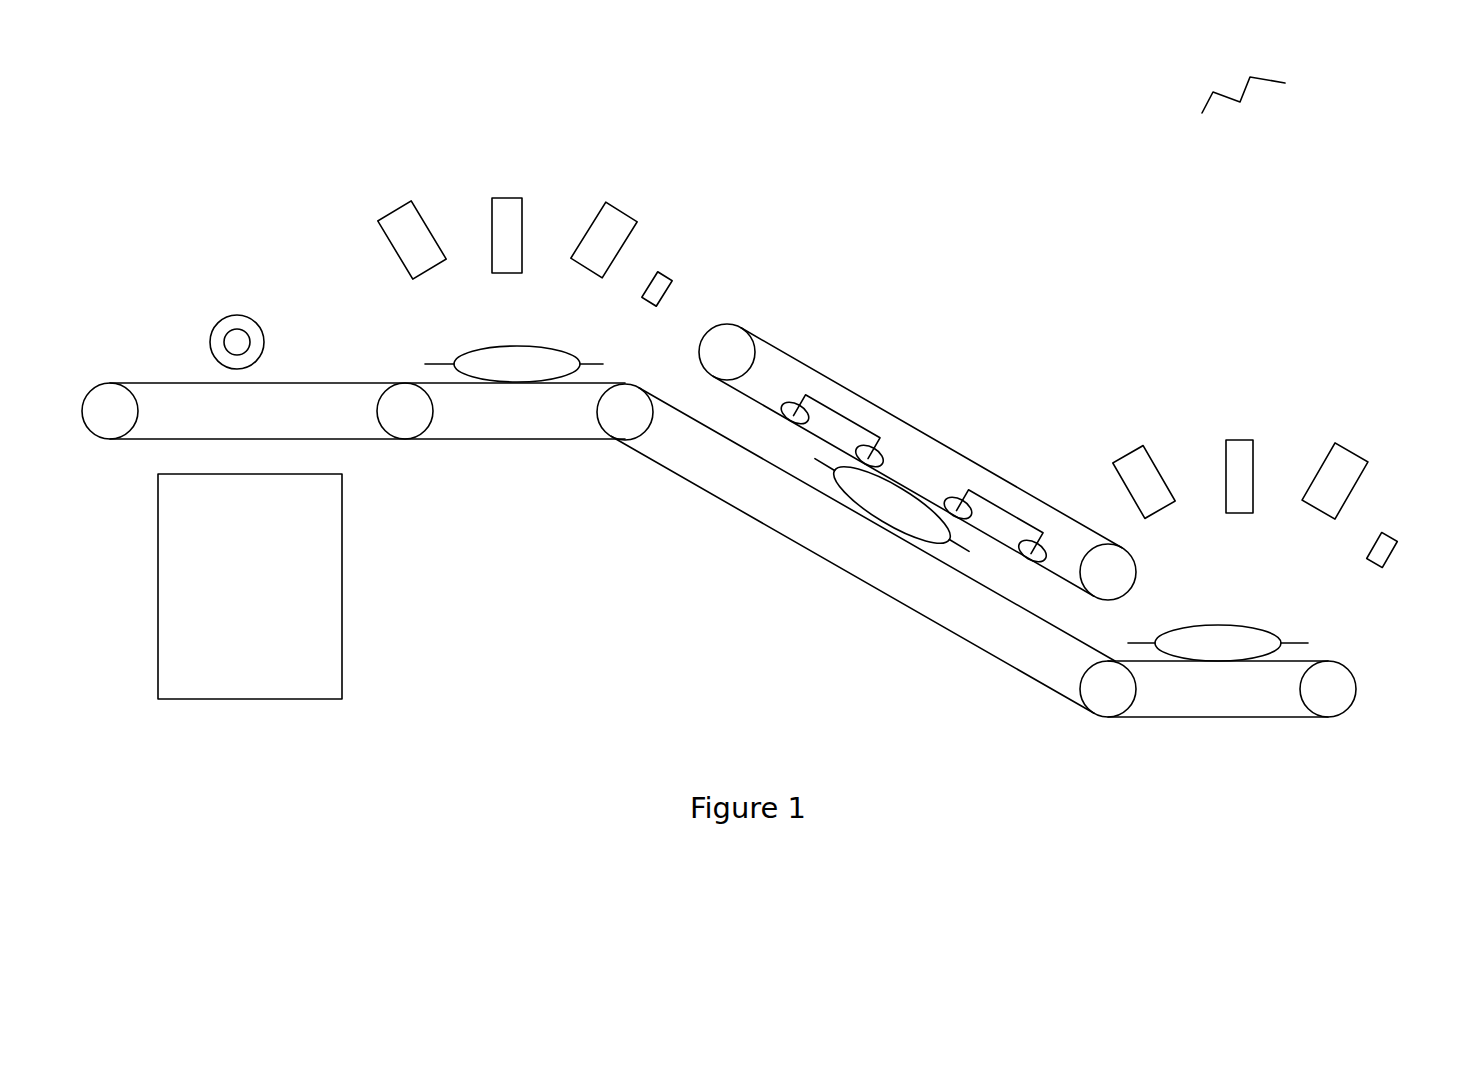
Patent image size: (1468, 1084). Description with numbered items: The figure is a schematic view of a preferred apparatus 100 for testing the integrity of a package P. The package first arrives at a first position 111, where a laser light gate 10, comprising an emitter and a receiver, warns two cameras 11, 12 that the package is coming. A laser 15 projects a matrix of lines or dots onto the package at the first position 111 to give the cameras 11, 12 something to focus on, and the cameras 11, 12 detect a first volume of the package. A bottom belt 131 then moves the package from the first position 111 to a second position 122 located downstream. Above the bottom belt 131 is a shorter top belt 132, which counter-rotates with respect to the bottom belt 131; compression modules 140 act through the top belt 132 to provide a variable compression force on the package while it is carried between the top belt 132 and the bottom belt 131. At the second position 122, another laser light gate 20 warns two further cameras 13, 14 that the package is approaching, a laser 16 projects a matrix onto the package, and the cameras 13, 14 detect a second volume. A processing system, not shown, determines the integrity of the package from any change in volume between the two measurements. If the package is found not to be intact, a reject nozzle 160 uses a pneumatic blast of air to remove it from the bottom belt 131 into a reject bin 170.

The apparatus 100 is at (1280, 93).
The laser light gate 10 is at (1395, 550).
The camera 11 is at (1140, 445).
The camera 12 is at (1358, 452).
The camera 13 is at (398, 198).
The camera 14 is at (615, 210).
The laser 15 is at (1242, 442).
The laser 16 is at (510, 207).
The laser light gate 20 is at (670, 277).
The first position 111 is at (1218, 705).
The second position 122 is at (367, 425).
The bottom belt 131 is at (890, 568).
The top belt 132 is at (935, 468).
The compression module 140 is at (843, 417).
The reject nozzle 160 is at (232, 313).
The reject bin 170 is at (250, 586).